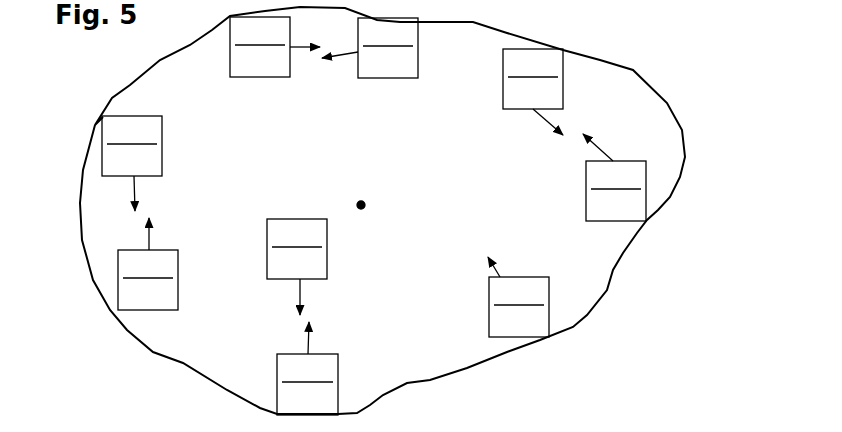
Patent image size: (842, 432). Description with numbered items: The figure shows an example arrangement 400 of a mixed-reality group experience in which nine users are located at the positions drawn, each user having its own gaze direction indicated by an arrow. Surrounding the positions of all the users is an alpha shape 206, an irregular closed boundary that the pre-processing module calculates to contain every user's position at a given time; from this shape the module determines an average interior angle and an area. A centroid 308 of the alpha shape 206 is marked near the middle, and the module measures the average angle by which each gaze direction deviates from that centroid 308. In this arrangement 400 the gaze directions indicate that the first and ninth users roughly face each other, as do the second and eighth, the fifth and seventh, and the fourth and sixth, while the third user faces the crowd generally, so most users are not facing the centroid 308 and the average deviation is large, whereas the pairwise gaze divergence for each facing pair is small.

The alpha shape 206 is at (636, 71).
The arrangement 400 is at (746, 98).
The centroid 308 is at (364, 204).